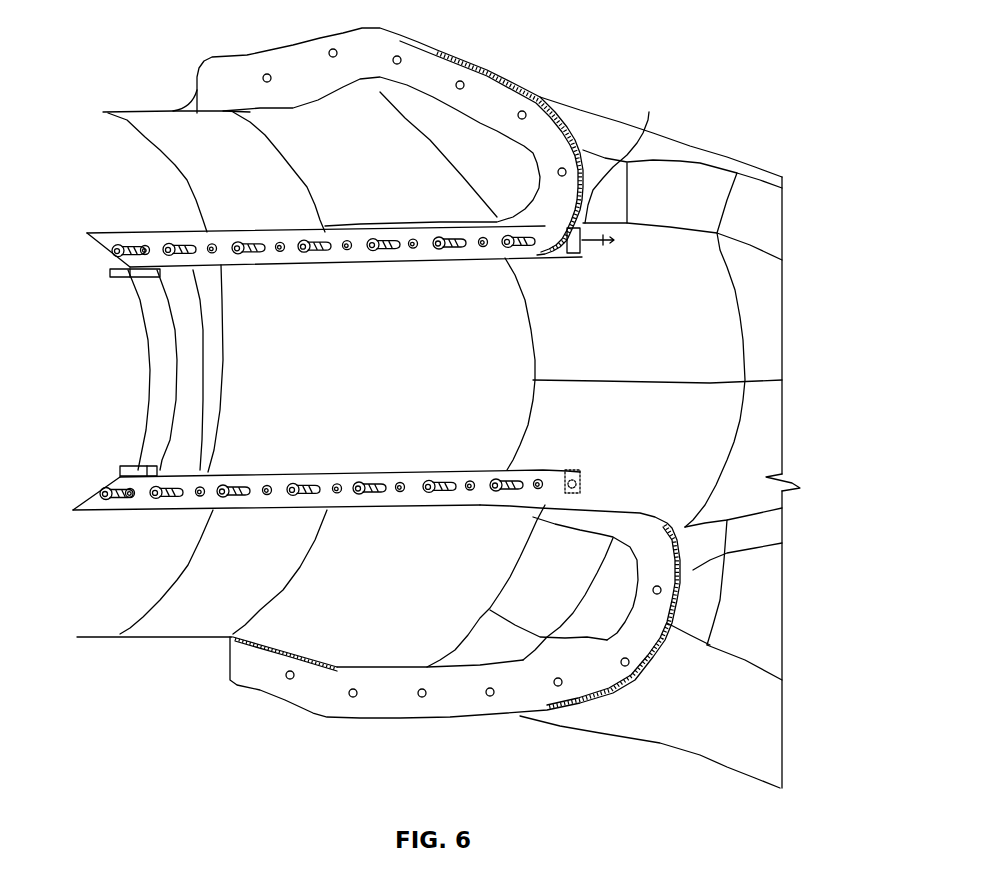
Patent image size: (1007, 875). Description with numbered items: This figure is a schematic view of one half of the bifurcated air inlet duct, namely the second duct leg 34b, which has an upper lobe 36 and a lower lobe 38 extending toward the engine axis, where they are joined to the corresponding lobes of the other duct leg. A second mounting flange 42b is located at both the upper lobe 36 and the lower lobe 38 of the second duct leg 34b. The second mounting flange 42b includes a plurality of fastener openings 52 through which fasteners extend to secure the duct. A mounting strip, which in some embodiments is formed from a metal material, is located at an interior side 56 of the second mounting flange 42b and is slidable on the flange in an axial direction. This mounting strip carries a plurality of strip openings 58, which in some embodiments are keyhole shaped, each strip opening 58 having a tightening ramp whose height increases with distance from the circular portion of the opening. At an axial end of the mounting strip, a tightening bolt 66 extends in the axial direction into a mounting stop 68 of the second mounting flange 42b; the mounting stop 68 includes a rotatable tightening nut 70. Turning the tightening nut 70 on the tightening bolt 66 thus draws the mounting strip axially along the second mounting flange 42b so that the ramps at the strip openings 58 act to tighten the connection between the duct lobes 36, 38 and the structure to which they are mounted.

The second duct leg 34b is at (774, 345).
The upper lobe 36 is at (200, 228).
The lower lobe 38 is at (282, 510).
The second mounting flange 42b is at (133, 232).
The fastener openings 52 is at (360, 472).
The interior side 56 is at (131, 466).
The strip openings 58 is at (247, 262).
The tightening bolt 66 is at (600, 247).
The mounting stop 68 is at (568, 258).
The tightening nut 70 is at (649, 112).